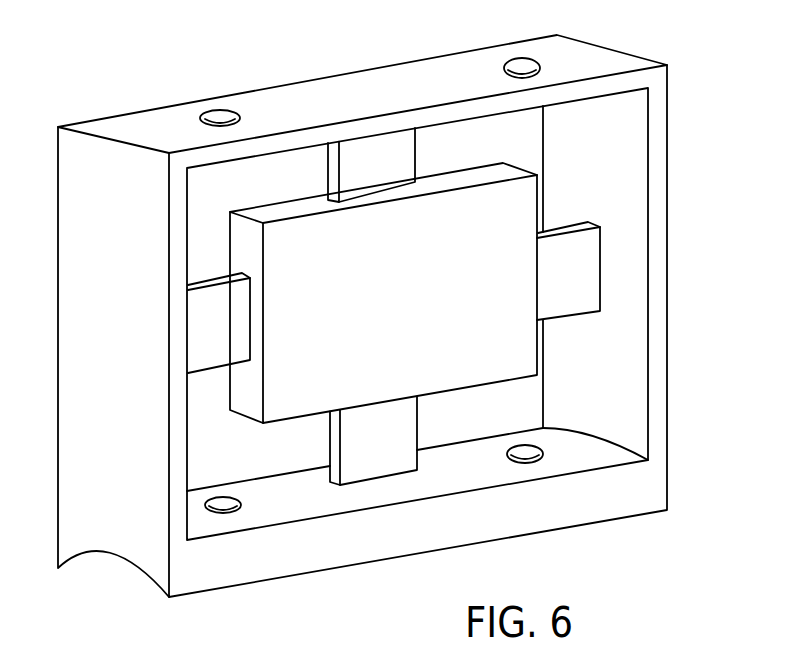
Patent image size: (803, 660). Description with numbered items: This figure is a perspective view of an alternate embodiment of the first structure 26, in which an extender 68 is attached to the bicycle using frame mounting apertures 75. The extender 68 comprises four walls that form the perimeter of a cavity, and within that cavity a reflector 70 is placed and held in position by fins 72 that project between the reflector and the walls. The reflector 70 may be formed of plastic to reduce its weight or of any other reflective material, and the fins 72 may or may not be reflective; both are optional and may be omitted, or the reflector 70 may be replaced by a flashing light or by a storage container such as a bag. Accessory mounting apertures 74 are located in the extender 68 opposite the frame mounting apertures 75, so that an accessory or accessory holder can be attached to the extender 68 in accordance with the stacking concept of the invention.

The first structure 26 is at (113, 71).
The extender 68 is at (618, 380).
The reflector 70 is at (408, 318).
The fins 72 is at (232, 341).
The accessory mounting apertures 74 is at (217, 123).
The frame mounting apertures 75 is at (222, 509).